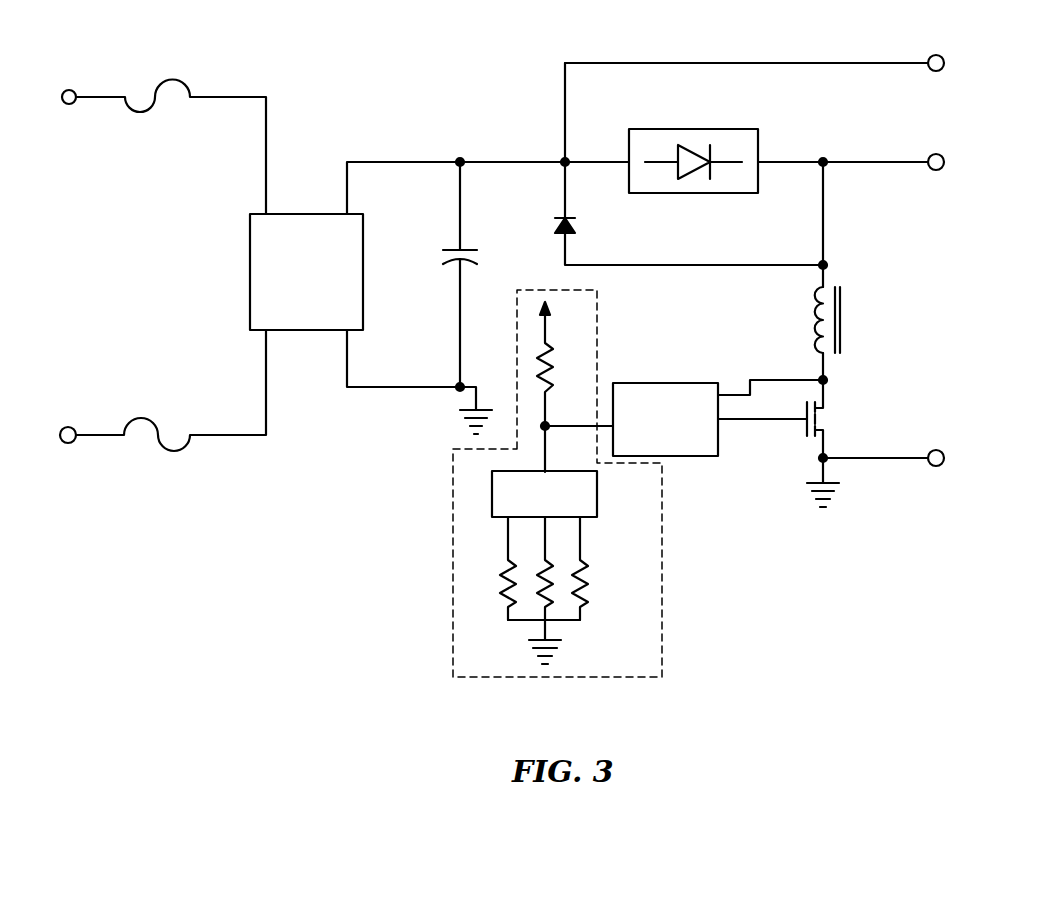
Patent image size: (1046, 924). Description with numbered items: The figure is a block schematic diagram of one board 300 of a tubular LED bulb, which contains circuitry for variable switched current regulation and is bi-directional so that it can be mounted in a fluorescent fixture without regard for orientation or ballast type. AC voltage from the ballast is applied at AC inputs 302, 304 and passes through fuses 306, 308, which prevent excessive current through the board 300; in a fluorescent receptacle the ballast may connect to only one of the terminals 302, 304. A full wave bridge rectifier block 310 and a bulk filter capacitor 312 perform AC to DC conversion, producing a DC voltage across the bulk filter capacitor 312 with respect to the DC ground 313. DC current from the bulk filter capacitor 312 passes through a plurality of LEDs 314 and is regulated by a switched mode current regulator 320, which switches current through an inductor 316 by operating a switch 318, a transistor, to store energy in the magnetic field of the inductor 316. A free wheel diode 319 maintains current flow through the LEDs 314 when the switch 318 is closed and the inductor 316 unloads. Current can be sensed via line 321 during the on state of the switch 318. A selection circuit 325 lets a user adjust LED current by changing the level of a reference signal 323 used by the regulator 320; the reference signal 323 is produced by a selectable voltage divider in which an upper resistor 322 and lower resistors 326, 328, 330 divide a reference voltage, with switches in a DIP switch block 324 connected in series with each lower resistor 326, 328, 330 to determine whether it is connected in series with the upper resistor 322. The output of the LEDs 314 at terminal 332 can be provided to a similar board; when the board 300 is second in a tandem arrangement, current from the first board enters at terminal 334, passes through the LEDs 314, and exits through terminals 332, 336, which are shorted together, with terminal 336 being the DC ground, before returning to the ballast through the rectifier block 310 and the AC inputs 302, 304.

The board 300 is at (501, 349).
The AC input 302 is at (72, 90).
The AC input 304 is at (68, 443).
The fuse 306 is at (141, 112).
The fuse 308 is at (143, 419).
The full wave bridge rectifier block 310 is at (250, 273).
The bulk filter capacitor 312 is at (459, 249).
The DC ground 313 is at (459, 385).
The plurality of LEDs 314 is at (677, 128).
The inductor 316 is at (841, 307).
The switch 318 is at (805, 433).
The free wheel diode 319 is at (560, 217).
The switched mode current regulator 320 is at (660, 382).
The line 321 is at (785, 379).
The upper resistor 322 is at (556, 372).
The reference signal 323 is at (567, 425).
The DIP switch block 324 is at (597, 508).
The selection circuit 325 is at (662, 657).
The lower resistor 326 is at (504, 582).
The lower resistor 328 is at (543, 600).
The lower resistor 330 is at (586, 591).
The terminal 332 is at (935, 153).
The terminal 334 is at (935, 55).
The terminal 336 is at (935, 449).